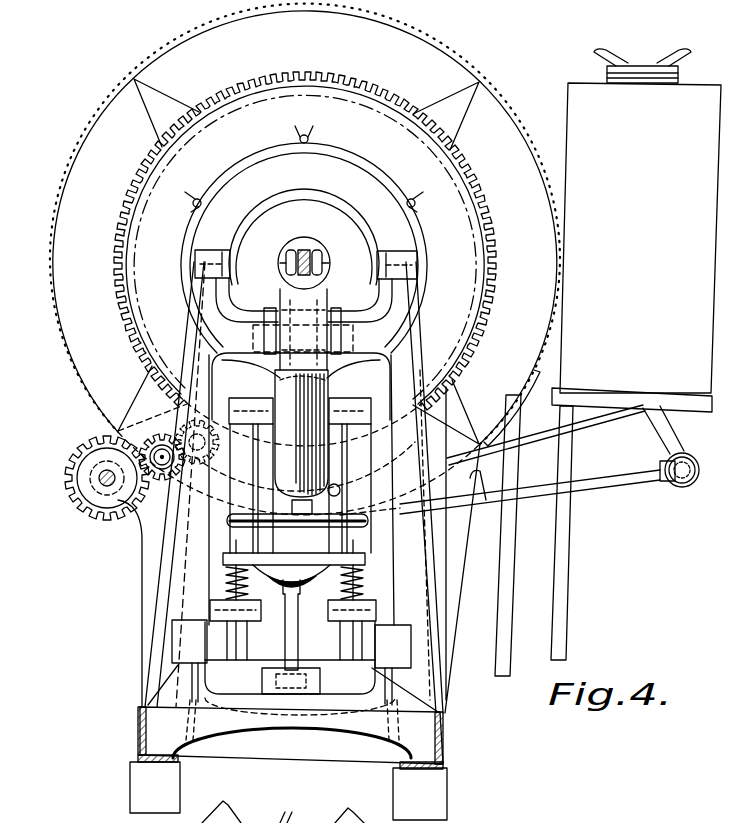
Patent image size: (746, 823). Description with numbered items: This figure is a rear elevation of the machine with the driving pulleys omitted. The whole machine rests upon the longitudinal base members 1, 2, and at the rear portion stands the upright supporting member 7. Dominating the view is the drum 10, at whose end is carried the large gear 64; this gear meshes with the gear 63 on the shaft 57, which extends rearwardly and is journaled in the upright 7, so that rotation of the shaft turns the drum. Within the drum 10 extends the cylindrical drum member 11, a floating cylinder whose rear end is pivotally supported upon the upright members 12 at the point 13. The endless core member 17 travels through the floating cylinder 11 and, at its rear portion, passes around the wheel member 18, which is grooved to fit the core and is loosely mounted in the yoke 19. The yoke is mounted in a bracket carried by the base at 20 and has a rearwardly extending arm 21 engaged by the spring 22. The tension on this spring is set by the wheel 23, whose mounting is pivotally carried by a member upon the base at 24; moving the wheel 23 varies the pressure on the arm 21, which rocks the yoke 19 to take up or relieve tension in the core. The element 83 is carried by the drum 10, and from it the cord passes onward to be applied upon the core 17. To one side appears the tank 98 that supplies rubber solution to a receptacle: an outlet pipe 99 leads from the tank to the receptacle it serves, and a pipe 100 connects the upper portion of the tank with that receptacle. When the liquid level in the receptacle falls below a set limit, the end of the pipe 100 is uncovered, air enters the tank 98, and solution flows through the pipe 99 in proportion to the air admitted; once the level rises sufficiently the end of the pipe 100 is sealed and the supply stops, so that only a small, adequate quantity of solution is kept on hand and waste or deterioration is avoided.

The base member 1 is at (130, 787).
The base member 2 is at (447, 792).
The upright supporting member 7 is at (140, 636).
The drum 10 is at (367, 176).
The cylindrical drum member 11 is at (347, 199).
The upright members 12 is at (163, 570).
The pivotal support 13 is at (395, 253).
The core member 17 is at (328, 396).
The wheel member 18 is at (342, 358).
The yoke 19 is at (305, 475).
The bracket 20 is at (293, 667).
The rearwardly extending arm 21 is at (293, 612).
The spring 22 is at (378, 599).
The wheel 23 is at (228, 519).
The pivotal mounting member 24 is at (262, 677).
The shaft 57 is at (100, 488).
The gear 63 is at (110, 512).
The large gear 64 is at (312, 259).
The cord guide carried by the drum 83 is at (305, 259).
The tank 98 is at (608, 362).
The outlet pipe 99 is at (627, 487).
The pipe 100 is at (595, 418).